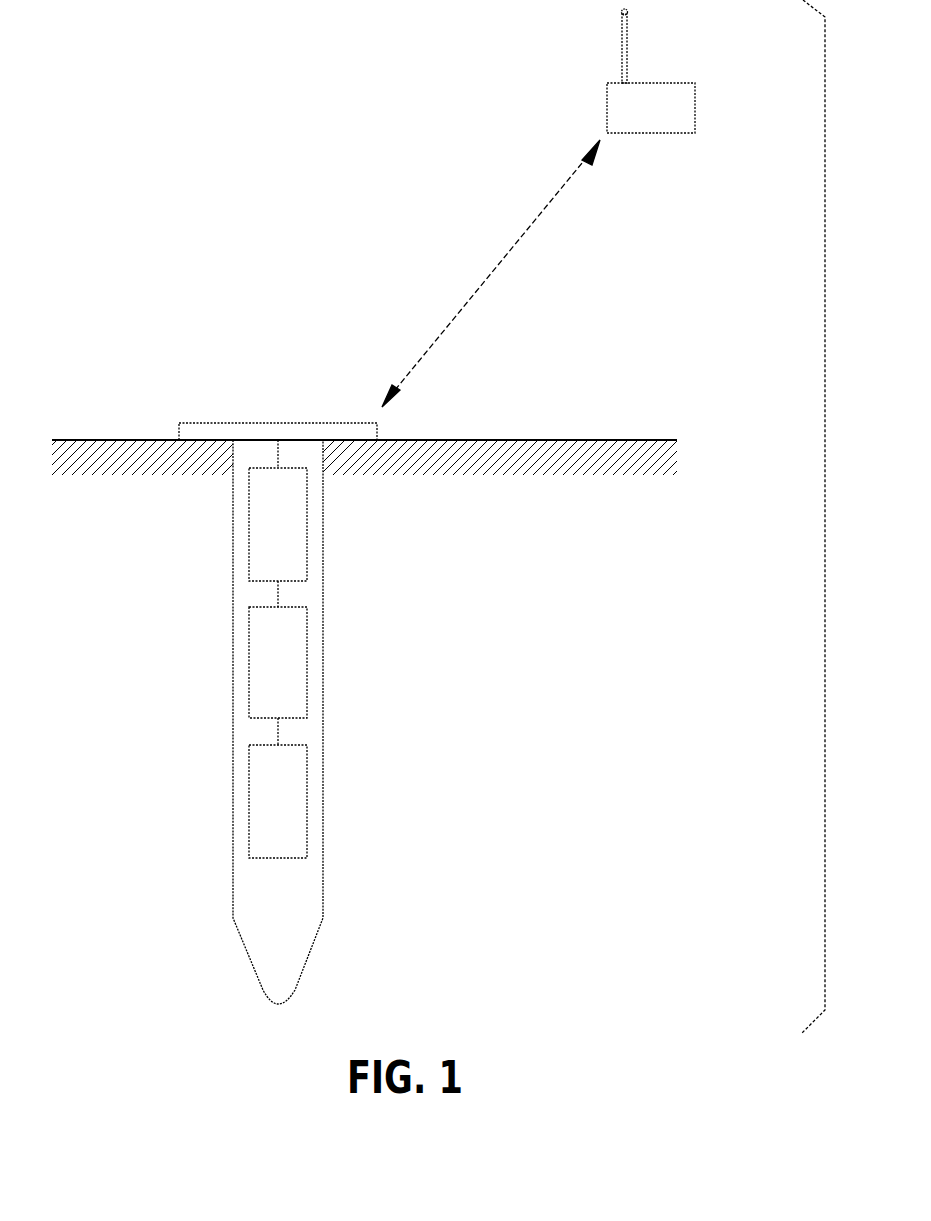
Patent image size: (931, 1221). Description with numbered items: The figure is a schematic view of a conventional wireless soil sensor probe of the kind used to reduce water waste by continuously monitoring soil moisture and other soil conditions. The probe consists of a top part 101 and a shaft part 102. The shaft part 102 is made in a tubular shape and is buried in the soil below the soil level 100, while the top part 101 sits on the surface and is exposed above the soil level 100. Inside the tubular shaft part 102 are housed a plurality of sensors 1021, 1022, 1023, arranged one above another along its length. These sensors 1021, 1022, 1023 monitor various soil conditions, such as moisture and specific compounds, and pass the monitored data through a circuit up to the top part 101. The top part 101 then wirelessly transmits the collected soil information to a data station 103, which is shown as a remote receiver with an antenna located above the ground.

The soil level 100 is at (630, 440).
The top part 101 is at (192, 423).
The shaft part 102 is at (233, 676).
The sensor 1021 is at (307, 522).
The sensor 1022 is at (307, 660).
The sensor 1023 is at (307, 800).
The data station 103 is at (695, 105).